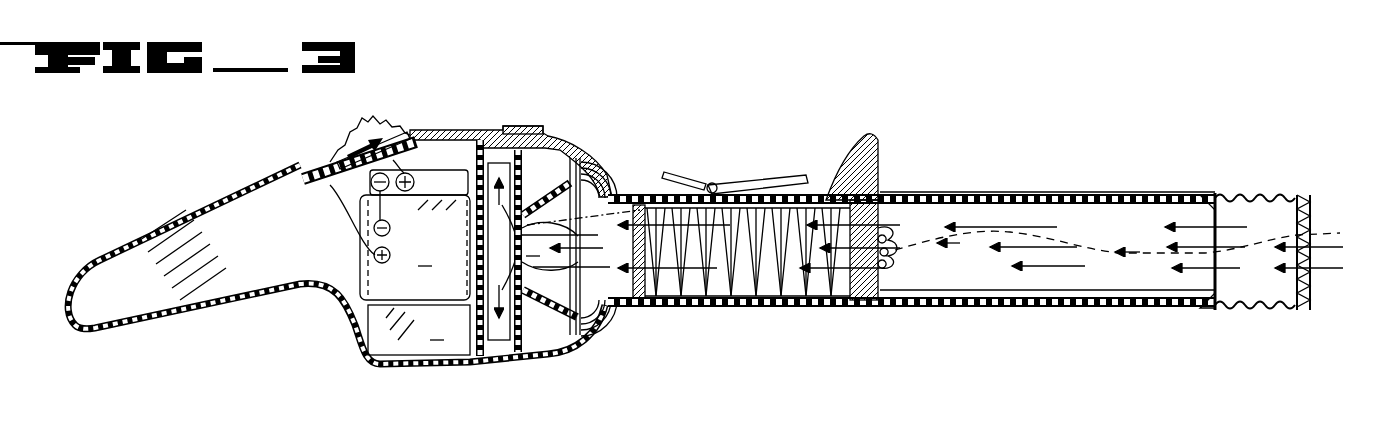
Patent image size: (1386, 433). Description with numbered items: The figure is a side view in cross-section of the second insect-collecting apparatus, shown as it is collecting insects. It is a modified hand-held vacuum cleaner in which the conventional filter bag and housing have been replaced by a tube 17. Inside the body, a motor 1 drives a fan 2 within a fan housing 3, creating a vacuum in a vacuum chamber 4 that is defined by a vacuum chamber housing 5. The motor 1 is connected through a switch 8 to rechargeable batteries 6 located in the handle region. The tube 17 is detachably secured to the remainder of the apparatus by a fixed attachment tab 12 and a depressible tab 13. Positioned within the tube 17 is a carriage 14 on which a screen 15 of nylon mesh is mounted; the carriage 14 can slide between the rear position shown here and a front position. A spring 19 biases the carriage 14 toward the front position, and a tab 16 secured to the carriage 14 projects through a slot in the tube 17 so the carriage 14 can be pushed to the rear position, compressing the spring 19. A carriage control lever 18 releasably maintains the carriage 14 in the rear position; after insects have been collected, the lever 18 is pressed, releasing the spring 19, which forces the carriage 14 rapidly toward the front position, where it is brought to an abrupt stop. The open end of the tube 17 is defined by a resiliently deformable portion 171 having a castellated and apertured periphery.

The motor 1 is at (400, 230).
The fan 2 is at (497, 368).
The fan housing 3 is at (530, 318).
The vacuum chamber 4 is at (560, 246).
The vacuum chamber housing 5 is at (548, 188).
The rechargeable batteries 6 is at (419, 330).
The switch 8 is at (346, 132).
The fixed attachment tab 12 is at (520, 367).
The depressible tab 13 is at (524, 127).
The carriage 14 is at (864, 300).
The screen 15 is at (880, 270).
The tab 16 is at (832, 172).
The tube 17 is at (1005, 308).
The carriage control lever 18 is at (757, 178).
The spring 19 is at (720, 280).
The resiliently deformable portion 171 is at (1240, 198).